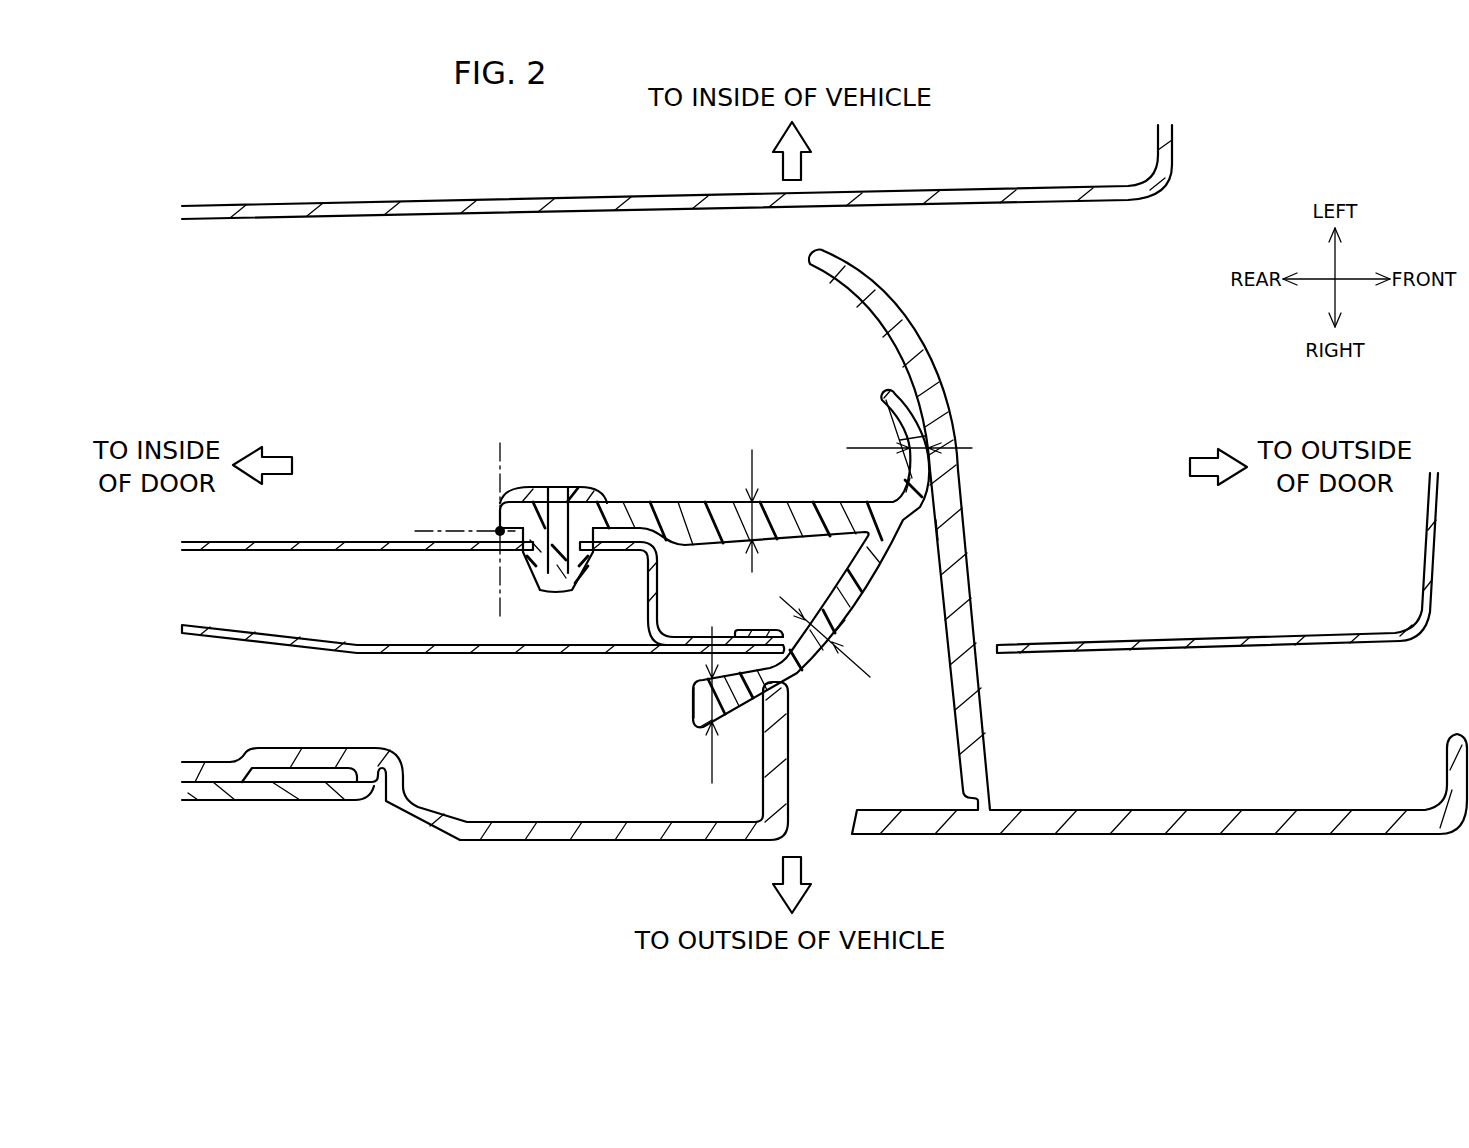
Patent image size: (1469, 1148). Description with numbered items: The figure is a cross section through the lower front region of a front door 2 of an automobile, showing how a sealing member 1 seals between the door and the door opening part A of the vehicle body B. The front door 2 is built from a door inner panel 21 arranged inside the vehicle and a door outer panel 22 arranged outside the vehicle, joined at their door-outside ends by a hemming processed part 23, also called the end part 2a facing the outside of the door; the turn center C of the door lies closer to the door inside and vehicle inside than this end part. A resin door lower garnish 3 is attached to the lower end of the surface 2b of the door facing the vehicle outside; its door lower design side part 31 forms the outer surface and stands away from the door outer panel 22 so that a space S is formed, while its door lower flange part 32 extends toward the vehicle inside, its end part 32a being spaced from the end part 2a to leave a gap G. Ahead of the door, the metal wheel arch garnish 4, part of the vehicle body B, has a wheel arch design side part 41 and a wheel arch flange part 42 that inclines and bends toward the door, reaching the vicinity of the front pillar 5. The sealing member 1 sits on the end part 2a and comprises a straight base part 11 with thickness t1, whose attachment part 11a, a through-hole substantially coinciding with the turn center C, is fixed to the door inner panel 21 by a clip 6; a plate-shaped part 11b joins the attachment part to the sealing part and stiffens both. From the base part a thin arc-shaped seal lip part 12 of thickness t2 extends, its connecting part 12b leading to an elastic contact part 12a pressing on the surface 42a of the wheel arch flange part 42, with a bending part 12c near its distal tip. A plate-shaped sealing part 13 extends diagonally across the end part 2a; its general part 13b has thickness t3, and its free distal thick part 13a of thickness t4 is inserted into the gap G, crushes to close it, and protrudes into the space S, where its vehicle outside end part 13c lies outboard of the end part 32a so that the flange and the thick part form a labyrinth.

The sealing member 1 is at (657, 445).
The base part 11 is at (702, 490).
The attachment part 11a is at (560, 492).
The plate-shaped part 11b is at (846, 500).
The seal lip part 12 is at (869, 401).
The elastic contact part 12a is at (936, 445).
The connecting part 12b is at (920, 491).
The bending part 12c is at (889, 389).
The sealing part 13 is at (871, 611).
The thick part 13a is at (697, 705).
The general part 13b is at (849, 624).
The vehicle outside end part 13c is at (703, 730).
The front door 2 is at (483, 591).
The end part facing the outside of the door 2a is at (743, 609).
The surface facing the outside of the vehicle 2b is at (448, 654).
The door inner panel 21 is at (356, 540).
The door outer panel 22 is at (283, 646).
The hemming processed part 23 is at (782, 632).
The door lower garnish 3 is at (447, 848).
The door lower design side part 31 is at (527, 842).
The door lower flange part 32 is at (781, 768).
The end part of the door lower flange part facing the inside of the vehicle 32a is at (783, 697).
The wheel arch garnish 4 is at (1253, 849).
The vehicle body B is at (1138, 597).
The wheel arch design side part 41 is at (1183, 836).
The wheel arch flange part 42 is at (970, 706).
The surface of the wheel arch flange part facing the front door 42a is at (930, 552).
The front pillar 5 is at (1056, 201).
The clip 6 is at (521, 487).
The door opening part A is at (960, 758).
The turn center C is at (497, 529).
The gap G is at (792, 680).
The space S is at (541, 755).
The thickness dimension of the base part t1 is at (763, 511).
The thickness dimension of the seal lip part t2 is at (909, 436).
The thickness dimension of the general part t3 is at (831, 637).
The thickness dimension of the thick part t4 is at (699, 705).